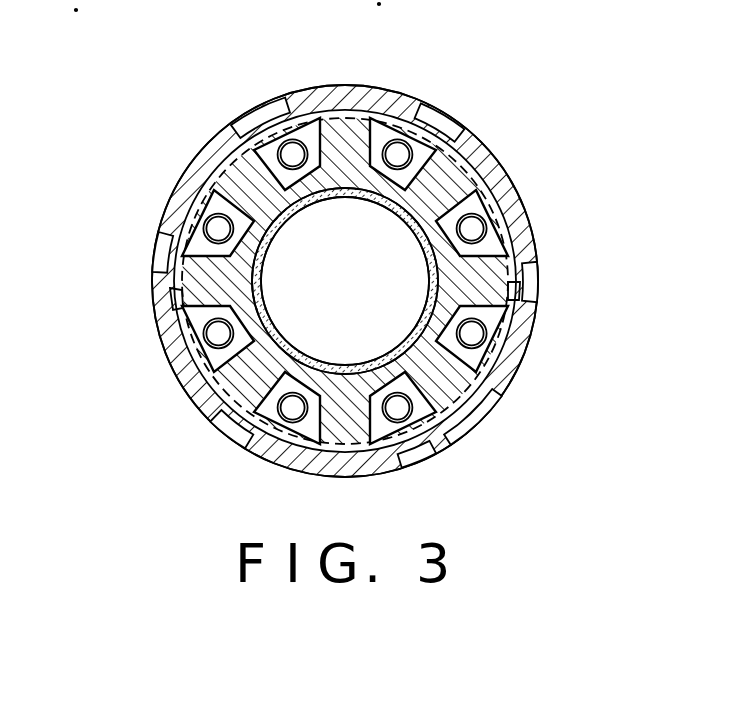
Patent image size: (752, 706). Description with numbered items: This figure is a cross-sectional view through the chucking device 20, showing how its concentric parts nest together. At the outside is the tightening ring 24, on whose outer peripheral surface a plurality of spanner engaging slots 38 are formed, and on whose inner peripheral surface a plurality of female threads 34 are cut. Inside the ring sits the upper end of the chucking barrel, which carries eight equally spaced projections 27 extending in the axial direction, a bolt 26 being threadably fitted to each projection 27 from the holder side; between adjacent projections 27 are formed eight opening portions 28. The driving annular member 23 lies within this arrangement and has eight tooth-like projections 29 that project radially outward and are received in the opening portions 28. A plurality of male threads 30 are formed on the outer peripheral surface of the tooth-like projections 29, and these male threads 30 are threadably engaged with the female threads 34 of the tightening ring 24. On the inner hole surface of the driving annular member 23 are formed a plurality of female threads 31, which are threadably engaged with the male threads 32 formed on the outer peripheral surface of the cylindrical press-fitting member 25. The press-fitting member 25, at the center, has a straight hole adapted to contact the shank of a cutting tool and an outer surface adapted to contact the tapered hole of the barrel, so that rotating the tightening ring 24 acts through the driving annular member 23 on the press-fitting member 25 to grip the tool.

The chucking device 20 is at (146, 208).
The driving annular member 23 is at (165, 283).
The tightening ring 24 is at (498, 175).
The cylindrical press-fitting member 25 is at (430, 285).
The bolt 26 is at (368, 104).
The projection 27 is at (262, 150).
The opening portion 28 is at (158, 306).
The tooth-like projection 29 is at (205, 402).
The male threads 30 is at (458, 386).
The female threads 31 is at (265, 238).
The male threads 32 is at (270, 300).
The female threads 34 is at (477, 430).
The spanner engaging slot 38 is at (270, 108).